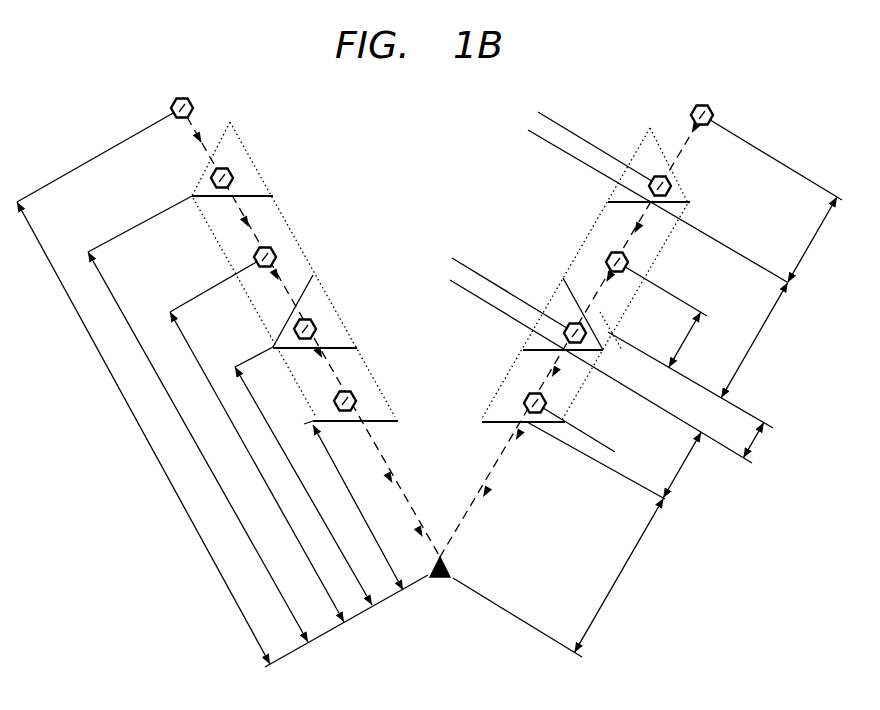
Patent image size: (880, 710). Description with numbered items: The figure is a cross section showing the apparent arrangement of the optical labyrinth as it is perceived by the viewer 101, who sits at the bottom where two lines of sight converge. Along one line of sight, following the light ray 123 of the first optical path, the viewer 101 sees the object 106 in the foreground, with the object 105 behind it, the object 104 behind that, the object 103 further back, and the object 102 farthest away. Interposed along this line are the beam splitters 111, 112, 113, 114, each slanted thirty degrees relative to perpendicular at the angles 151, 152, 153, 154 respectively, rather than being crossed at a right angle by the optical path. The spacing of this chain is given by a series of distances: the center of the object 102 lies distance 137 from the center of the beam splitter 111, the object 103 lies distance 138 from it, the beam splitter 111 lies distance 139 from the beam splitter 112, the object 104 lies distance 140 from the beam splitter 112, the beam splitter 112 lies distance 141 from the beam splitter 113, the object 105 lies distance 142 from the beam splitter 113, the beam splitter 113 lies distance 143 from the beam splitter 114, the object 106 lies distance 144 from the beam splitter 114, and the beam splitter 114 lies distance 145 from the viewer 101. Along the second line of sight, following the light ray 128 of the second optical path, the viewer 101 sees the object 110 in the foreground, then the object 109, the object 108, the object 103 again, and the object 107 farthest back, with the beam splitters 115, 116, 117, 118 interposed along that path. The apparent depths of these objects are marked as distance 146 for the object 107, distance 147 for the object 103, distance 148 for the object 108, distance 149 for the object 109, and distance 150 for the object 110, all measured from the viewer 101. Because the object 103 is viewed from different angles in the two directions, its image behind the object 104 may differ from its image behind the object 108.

The viewer 101 is at (450, 572).
The object 102 is at (713, 110).
The object 103 is at (233, 172).
The object 104 is at (628, 260).
The object 105 is at (566, 325).
The object 106 is at (547, 400).
The object 107 is at (191, 103).
The object 108 is at (276, 252).
The object 109 is at (316, 326).
The object 110 is at (356, 398).
The beam splitter 111 is at (608, 206).
The beam splitter 112 is at (563, 278).
The beam splitter 113 is at (523, 351).
The beam splitter 114 is at (503, 421).
The beam splitter 115 is at (273, 196).
The beam splitter 116 is at (303, 282).
The beam splitter 117 is at (357, 348).
The beam splitter 118 is at (398, 421).
The light ray 123 is at (483, 482).
The light ray 128 is at (408, 510).
The distance 137 is at (685, 198).
The distance 138 is at (511, 152).
The distance 139 is at (754, 340).
The distance 140 is at (690, 345).
The distance 141 is at (758, 440).
The distance 142 is at (424, 297).
The distance 143 is at (601, 389).
The distance 144 is at (581, 484).
The distance 145 is at (619, 575).
The distance 146 is at (143, 386).
The distance 147 is at (198, 419).
The distance 148 is at (257, 439).
The distance 149 is at (303, 476).
The distance 150 is at (353, 505).
The angle 151 is at (690, 203).
The angle 152 is at (611, 335).
The angle 153 is at (597, 358).
The angle 154 is at (550, 426).